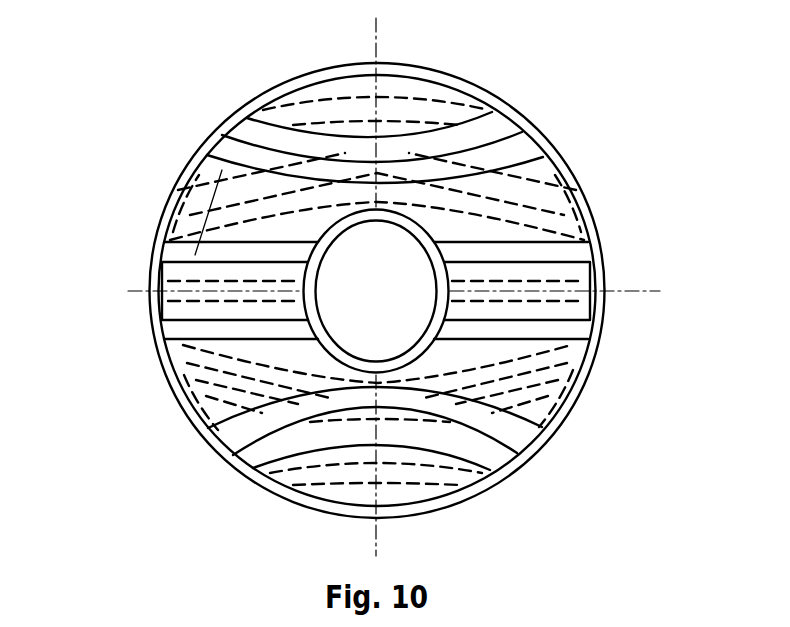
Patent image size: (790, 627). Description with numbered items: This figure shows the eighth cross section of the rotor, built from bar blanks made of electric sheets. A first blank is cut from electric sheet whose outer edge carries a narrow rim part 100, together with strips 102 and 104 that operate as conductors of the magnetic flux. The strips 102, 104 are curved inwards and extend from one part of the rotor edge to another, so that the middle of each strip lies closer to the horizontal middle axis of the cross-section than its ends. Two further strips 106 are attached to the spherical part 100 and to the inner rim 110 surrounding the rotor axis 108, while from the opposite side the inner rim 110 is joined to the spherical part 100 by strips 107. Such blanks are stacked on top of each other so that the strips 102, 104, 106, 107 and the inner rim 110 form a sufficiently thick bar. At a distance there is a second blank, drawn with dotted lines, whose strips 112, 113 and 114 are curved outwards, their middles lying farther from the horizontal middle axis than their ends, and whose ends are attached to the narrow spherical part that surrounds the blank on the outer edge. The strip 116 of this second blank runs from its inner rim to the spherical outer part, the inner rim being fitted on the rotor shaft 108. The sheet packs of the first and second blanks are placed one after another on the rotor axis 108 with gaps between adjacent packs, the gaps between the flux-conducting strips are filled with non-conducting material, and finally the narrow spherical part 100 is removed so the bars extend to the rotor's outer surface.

The narrow rim part 100 is at (457, 77).
The strip 102 is at (506, 112).
The strip 104 is at (493, 168).
The strips 106 is at (530, 327).
The strips 107 is at (183, 332).
The rotor axis 108 is at (390, 307).
The inner rim 110 is at (380, 355).
The strip 112 is at (320, 114).
The strip 113 is at (222, 170).
The strip 114 is at (243, 257).
The strip 116 is at (232, 295).